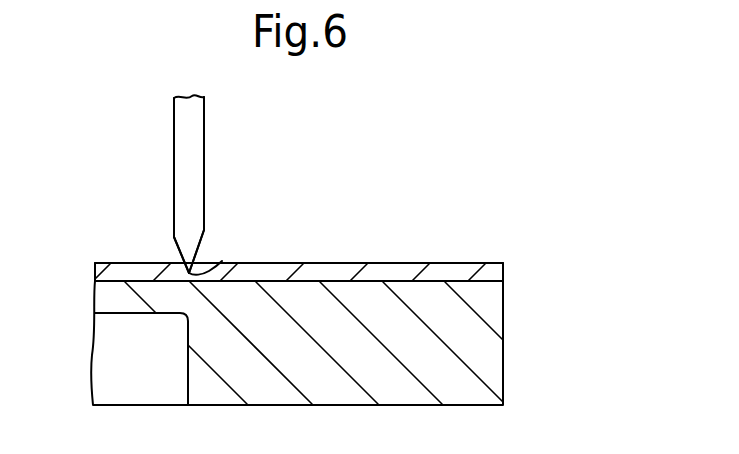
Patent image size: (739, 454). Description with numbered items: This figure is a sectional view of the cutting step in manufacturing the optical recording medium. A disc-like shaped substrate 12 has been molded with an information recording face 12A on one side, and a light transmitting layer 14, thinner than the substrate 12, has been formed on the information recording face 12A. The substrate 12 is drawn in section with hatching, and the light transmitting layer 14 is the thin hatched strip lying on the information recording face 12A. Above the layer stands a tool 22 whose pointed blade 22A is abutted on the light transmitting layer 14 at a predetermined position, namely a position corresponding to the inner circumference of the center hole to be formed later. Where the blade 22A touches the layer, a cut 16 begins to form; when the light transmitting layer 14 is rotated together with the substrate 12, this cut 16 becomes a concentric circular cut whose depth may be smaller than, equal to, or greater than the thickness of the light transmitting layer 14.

The substrate 12 is at (505, 349).
The information recording face 12A is at (373, 281).
The light transmitting layer 14 is at (468, 263).
The cut 16 is at (216, 264).
The tool 22 is at (204, 140).
The blade 22A is at (178, 246).